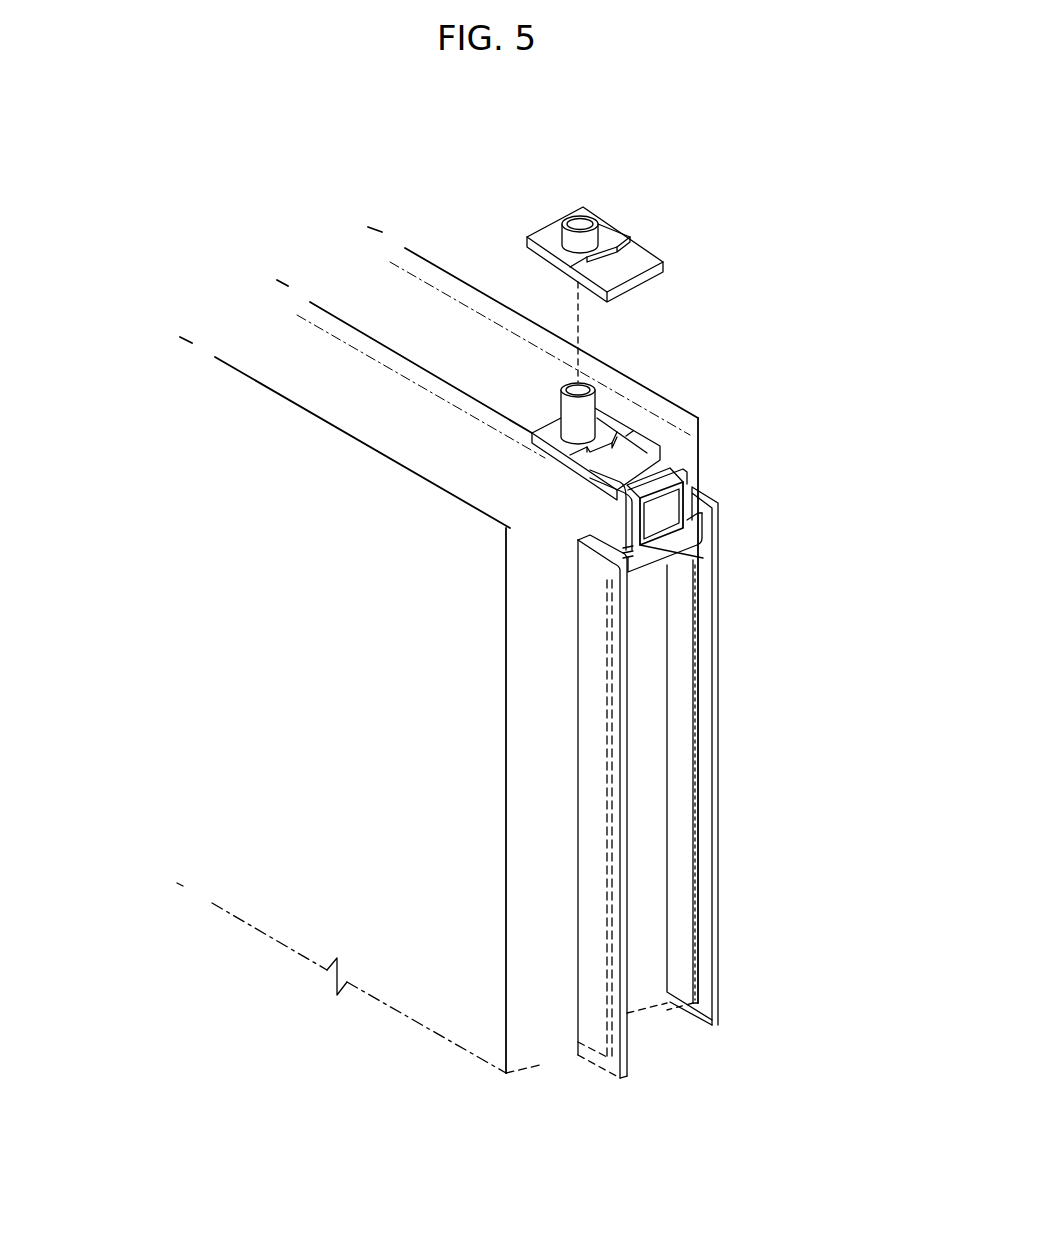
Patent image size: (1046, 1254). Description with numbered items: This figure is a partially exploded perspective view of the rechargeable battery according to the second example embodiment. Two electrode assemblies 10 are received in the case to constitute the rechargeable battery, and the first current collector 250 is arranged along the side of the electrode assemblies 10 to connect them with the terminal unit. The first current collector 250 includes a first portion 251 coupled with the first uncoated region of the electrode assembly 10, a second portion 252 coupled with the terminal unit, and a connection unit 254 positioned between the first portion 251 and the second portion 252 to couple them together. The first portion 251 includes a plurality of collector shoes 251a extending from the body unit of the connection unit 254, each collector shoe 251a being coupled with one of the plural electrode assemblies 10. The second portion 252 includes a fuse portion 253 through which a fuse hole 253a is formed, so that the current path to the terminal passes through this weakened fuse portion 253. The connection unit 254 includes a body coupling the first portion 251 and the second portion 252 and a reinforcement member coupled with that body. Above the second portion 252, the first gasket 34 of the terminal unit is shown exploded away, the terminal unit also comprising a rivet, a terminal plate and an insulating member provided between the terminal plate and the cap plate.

The electrode assembly 10 is at (428, 275).
The first gasket 34 is at (613, 234).
The first current collector 250 is at (701, 658).
The first portion 251 is at (697, 934).
The collector shoes 251a is at (597, 810).
The second portion 252 is at (626, 436).
The fuse portion 253 is at (720, 478).
The fuse hole 253a is at (633, 431).
The connection unit 254 is at (578, 539).